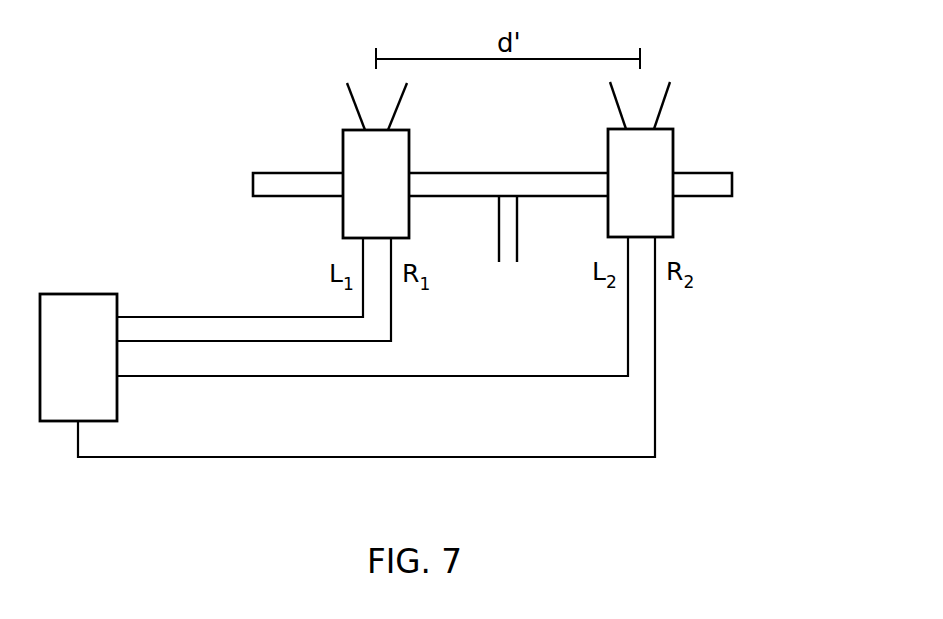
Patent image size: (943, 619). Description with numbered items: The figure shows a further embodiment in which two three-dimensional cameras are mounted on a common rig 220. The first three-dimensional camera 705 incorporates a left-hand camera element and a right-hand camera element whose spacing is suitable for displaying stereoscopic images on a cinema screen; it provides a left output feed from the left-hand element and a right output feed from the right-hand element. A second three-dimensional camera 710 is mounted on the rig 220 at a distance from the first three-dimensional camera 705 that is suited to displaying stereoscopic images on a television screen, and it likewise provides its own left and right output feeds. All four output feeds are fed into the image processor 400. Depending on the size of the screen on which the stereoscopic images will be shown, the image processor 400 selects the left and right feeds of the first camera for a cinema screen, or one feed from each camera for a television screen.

The rig 220 is at (732, 182).
The first 3D camera 705 is at (343, 150).
The second 3D camera 710 is at (673, 148).
The image processor 400 is at (78, 294).